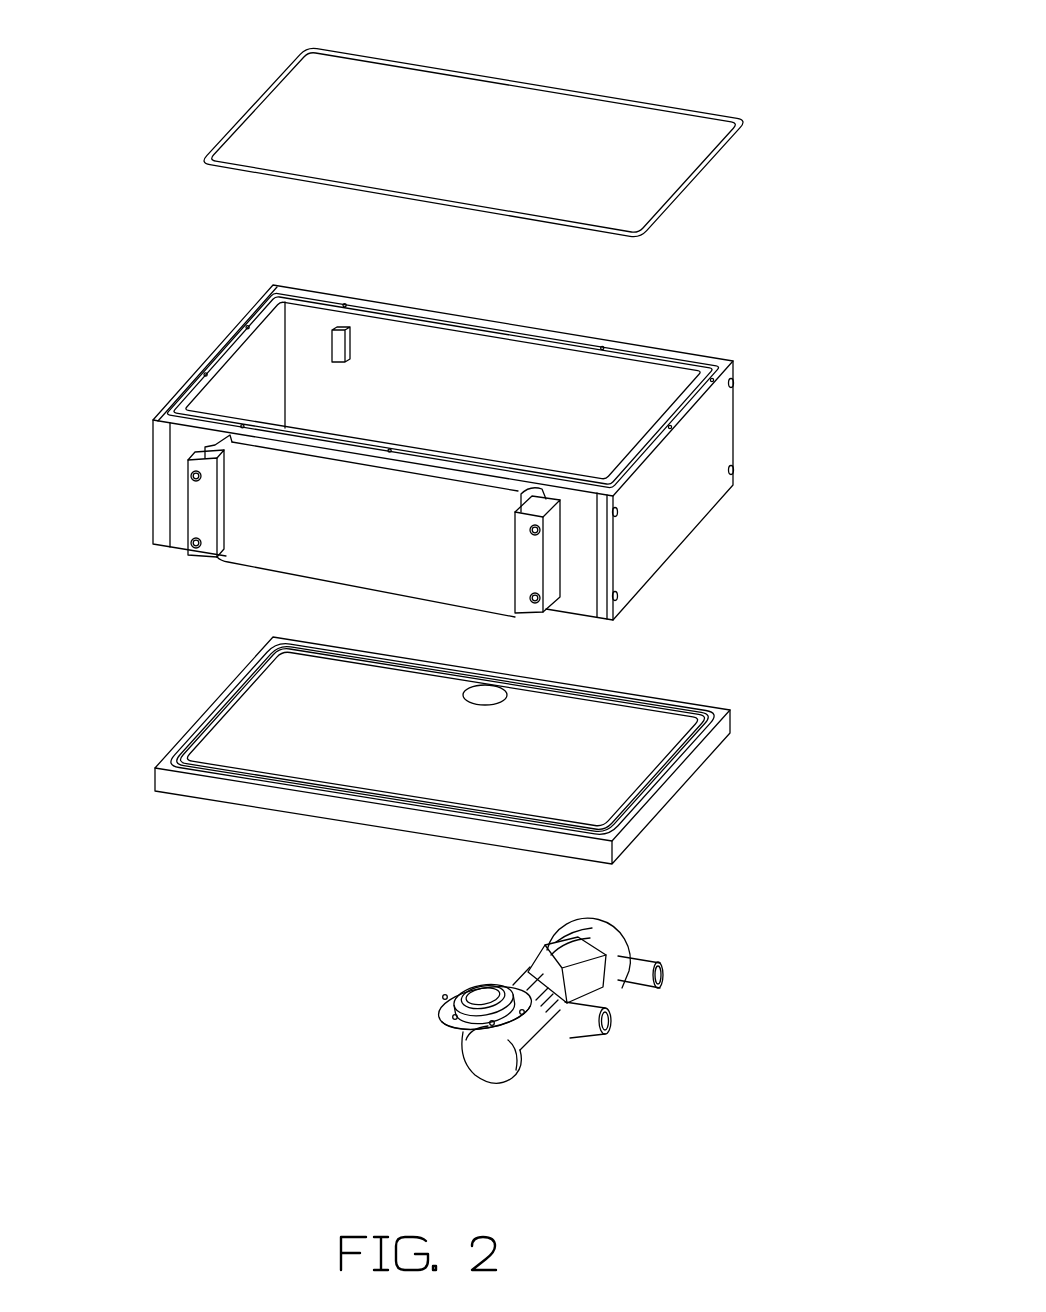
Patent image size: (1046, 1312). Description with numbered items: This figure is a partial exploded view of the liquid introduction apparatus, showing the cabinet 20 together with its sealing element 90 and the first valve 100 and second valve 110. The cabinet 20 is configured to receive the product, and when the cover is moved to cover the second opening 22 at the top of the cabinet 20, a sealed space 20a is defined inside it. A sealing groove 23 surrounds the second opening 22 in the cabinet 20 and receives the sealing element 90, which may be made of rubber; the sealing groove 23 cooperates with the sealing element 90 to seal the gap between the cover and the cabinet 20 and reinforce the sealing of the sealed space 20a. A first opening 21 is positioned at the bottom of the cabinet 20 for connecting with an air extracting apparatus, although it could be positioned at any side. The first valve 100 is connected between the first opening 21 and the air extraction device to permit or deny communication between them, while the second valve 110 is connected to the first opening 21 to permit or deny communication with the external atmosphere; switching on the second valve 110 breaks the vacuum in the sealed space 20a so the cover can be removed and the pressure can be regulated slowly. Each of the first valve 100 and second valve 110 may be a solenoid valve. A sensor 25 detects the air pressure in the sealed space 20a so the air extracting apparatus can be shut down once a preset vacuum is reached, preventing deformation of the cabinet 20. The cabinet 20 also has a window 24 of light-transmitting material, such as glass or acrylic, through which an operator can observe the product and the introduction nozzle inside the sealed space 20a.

The sealing element 90 is at (500, 77).
The cabinet 20 is at (673, 532).
The sealed space 20a is at (650, 382).
The first opening 21 is at (488, 692).
The second opening 22 is at (262, 363).
The sealing groove 23 is at (592, 342).
The window 24 is at (277, 555).
The sensor 25 is at (340, 340).
The first valve 100 is at (592, 1022).
The second valve 110 is at (642, 963).